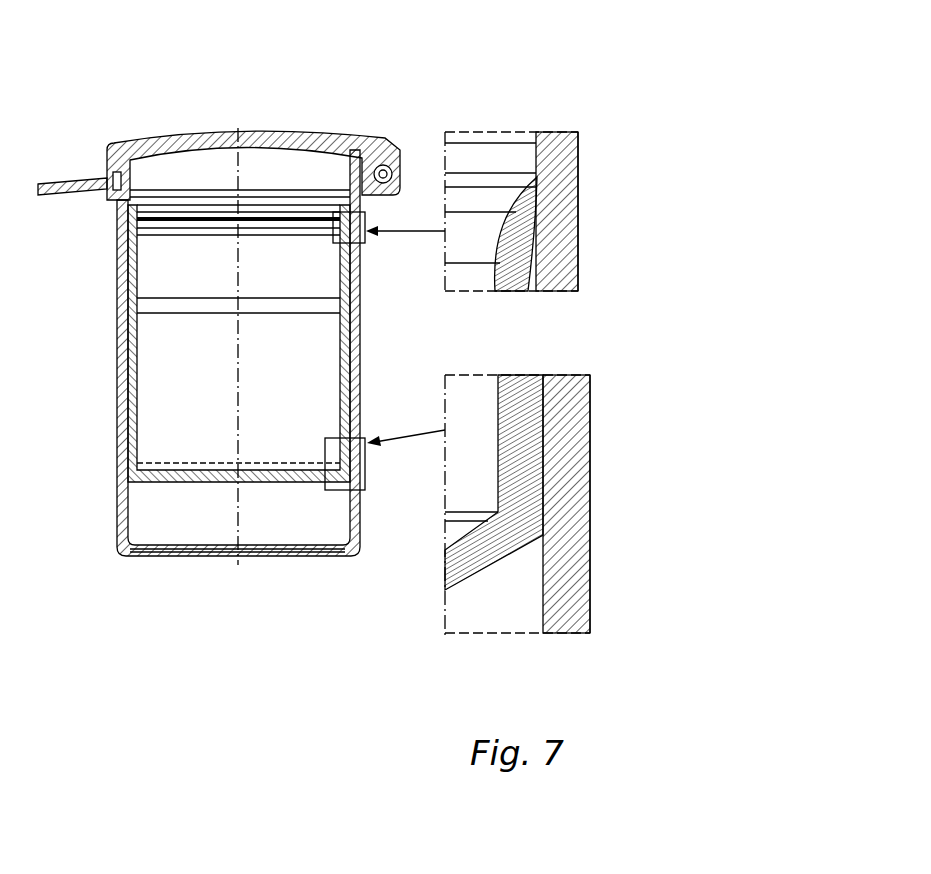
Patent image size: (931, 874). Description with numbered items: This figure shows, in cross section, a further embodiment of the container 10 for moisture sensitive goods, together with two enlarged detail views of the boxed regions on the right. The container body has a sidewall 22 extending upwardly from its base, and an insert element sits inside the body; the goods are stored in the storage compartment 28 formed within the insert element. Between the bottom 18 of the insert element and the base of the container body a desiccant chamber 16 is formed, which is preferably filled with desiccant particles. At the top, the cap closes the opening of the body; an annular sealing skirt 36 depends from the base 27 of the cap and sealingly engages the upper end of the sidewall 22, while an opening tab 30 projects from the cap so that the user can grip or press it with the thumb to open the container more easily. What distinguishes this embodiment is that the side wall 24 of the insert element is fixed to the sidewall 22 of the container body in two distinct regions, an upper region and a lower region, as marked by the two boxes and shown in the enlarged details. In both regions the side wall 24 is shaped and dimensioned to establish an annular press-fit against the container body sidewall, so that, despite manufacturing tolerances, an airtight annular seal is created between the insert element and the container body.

The container 10 is at (116, 588).
The desiccant chamber 16 is at (277, 517).
The bottom of the insert element 18 is at (178, 478).
The sidewall of the container body 22 is at (117, 512).
The side wall of the insert element 24 is at (127, 330).
The base of the cap 27 is at (290, 134).
The storage compartment 28 is at (208, 284).
The opening tab 30 is at (60, 180).
The sealing skirt 36 is at (135, 168).